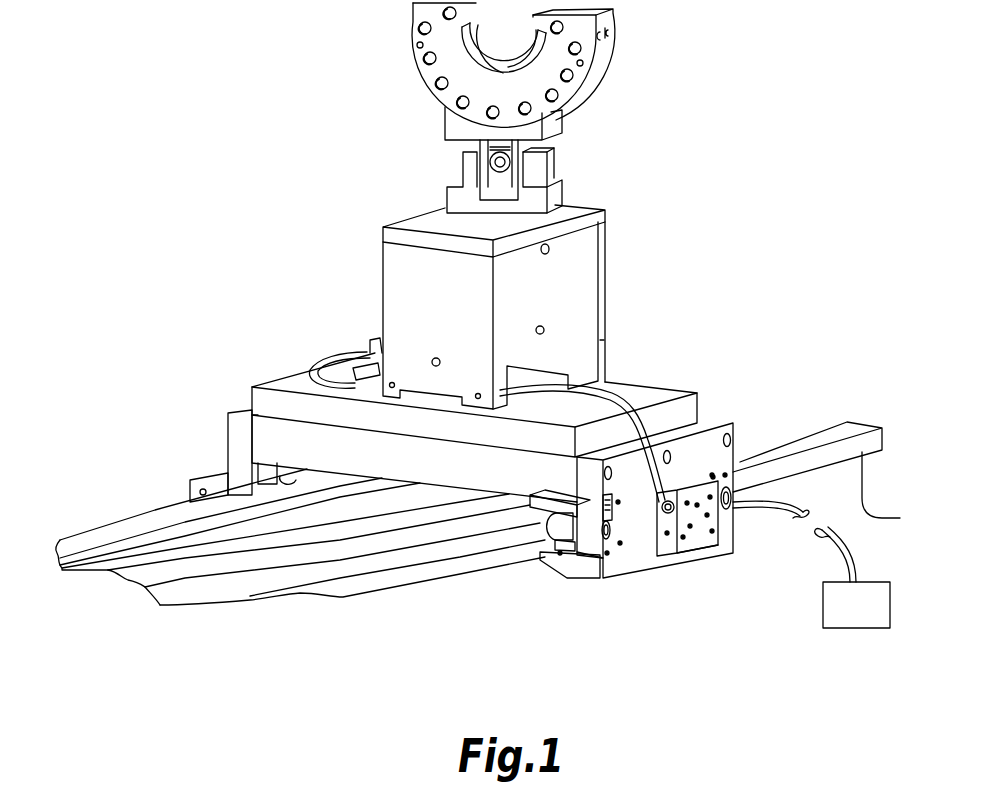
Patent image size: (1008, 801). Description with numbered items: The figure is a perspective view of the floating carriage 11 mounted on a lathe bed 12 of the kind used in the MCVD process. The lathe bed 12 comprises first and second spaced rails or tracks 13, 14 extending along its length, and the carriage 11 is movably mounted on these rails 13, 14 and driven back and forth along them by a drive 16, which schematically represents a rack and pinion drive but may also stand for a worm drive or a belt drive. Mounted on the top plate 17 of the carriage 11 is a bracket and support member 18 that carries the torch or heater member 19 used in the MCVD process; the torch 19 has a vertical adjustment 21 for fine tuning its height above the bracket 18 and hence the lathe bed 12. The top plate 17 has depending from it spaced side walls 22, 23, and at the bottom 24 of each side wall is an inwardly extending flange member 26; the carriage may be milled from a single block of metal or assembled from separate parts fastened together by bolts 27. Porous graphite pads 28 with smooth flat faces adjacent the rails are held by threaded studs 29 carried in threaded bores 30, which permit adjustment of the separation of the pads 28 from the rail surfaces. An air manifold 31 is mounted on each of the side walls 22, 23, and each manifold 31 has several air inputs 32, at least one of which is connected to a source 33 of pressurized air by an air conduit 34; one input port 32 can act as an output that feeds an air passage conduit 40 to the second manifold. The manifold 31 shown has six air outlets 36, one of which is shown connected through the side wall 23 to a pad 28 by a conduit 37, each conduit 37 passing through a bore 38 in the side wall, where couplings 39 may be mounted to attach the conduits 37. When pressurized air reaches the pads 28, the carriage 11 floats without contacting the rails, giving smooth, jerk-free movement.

The carriage 11 is at (278, 360).
The lathe bed 12 is at (158, 520).
The first rail 13 is at (95, 530).
The second rail 14 is at (338, 585).
The drive means 16 is at (160, 578).
The top plate 17 is at (263, 445).
The bracket and support member 18 is at (623, 393).
The torch 19 is at (603, 79).
The vertical adjustment 21 is at (490, 162).
The side wall 22 is at (238, 425).
The side wall 23 is at (598, 580).
The bottom 24 is at (585, 572).
The flange member 26 is at (587, 570).
The bolts 27 is at (727, 442).
The pads 28 is at (274, 481).
The threaded studs 29 is at (733, 493).
The threaded bores 30 is at (733, 508).
The air manifold 31 is at (684, 538).
The air inputs 32 is at (677, 553).
The source of pressurized air 33 is at (823, 602).
The air conduit 34 is at (855, 560).
The air outlets 36 is at (710, 495).
The conduit 37 is at (635, 515).
The bore 38 is at (726, 476).
The coupling 39 is at (606, 503).
The air passage conduit 40 is at (308, 372).